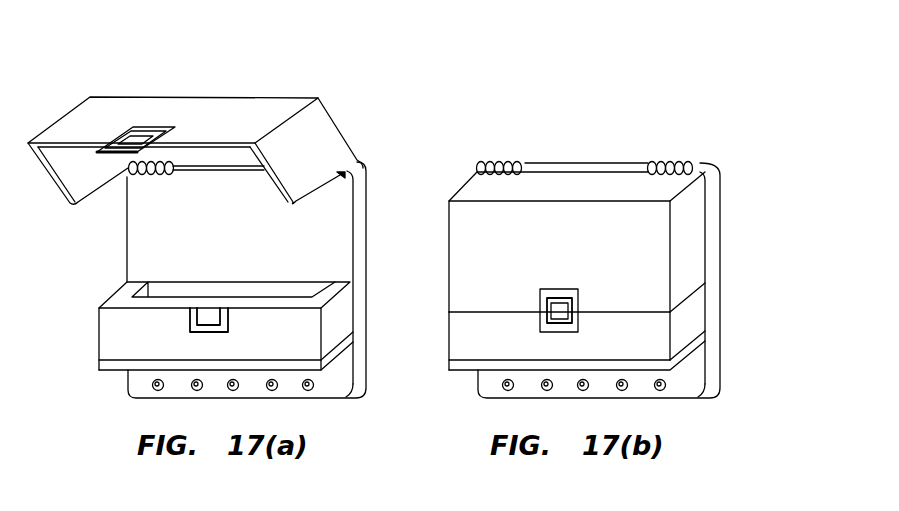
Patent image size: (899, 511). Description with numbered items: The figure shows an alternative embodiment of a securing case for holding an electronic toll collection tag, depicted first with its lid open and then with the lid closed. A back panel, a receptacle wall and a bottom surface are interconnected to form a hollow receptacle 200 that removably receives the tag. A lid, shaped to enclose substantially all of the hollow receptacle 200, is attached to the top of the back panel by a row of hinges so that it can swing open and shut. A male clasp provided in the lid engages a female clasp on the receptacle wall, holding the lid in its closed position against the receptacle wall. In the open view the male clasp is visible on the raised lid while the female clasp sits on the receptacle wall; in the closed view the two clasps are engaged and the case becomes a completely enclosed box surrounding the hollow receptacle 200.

The hollow receptacle 200 is at (237, 282).